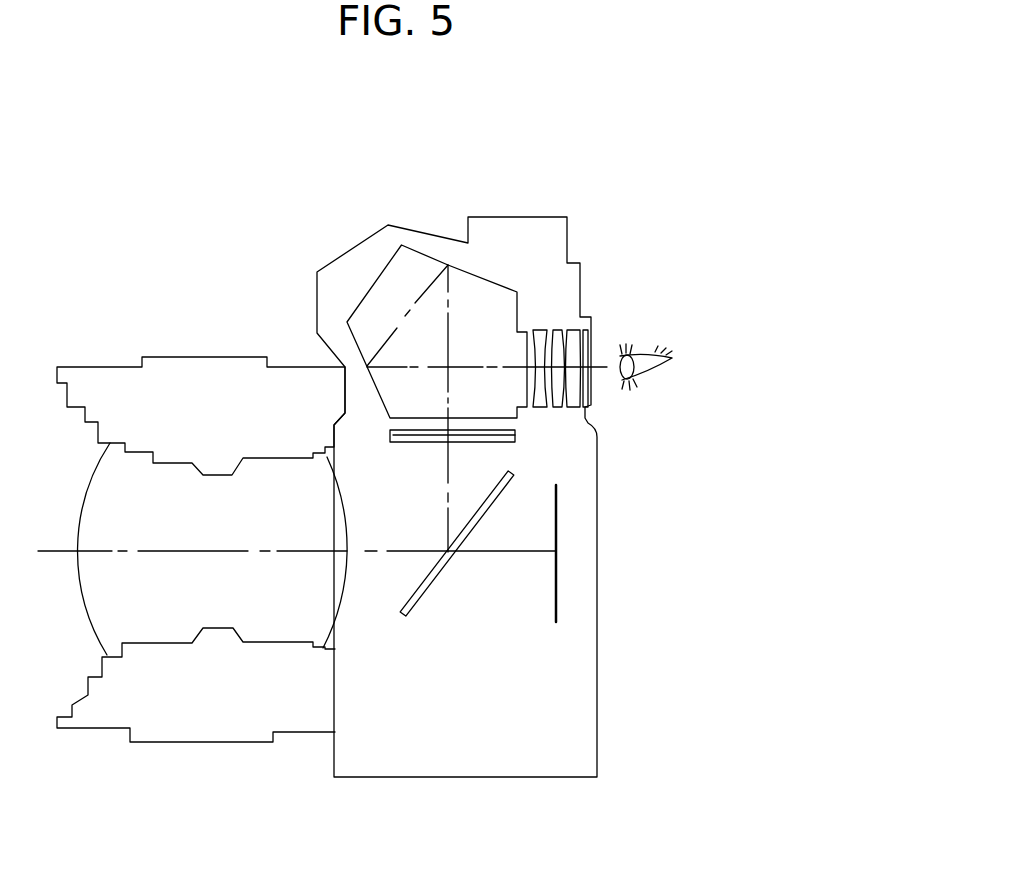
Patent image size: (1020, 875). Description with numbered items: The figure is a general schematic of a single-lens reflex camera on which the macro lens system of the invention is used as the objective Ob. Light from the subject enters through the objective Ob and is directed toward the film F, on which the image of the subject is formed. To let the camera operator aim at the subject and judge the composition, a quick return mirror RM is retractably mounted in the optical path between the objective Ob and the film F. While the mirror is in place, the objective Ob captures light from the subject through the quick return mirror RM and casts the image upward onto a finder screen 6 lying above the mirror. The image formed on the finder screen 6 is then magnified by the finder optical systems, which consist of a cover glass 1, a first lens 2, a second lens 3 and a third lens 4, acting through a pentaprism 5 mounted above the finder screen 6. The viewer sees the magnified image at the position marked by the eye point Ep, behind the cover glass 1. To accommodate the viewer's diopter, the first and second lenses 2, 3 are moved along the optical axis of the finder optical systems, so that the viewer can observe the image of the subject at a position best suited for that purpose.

The cover glass 1 is at (587, 332).
The first lens 2 is at (573, 330).
The second lens 3 is at (558, 330).
The third lens 4 is at (540, 330).
The pentaprism 5 is at (402, 265).
The finder screen 6 is at (390, 433).
The eye point Ep is at (615, 381).
The film F is at (556, 508).
The quick return mirror RM is at (428, 590).
The objective Ob is at (325, 670).